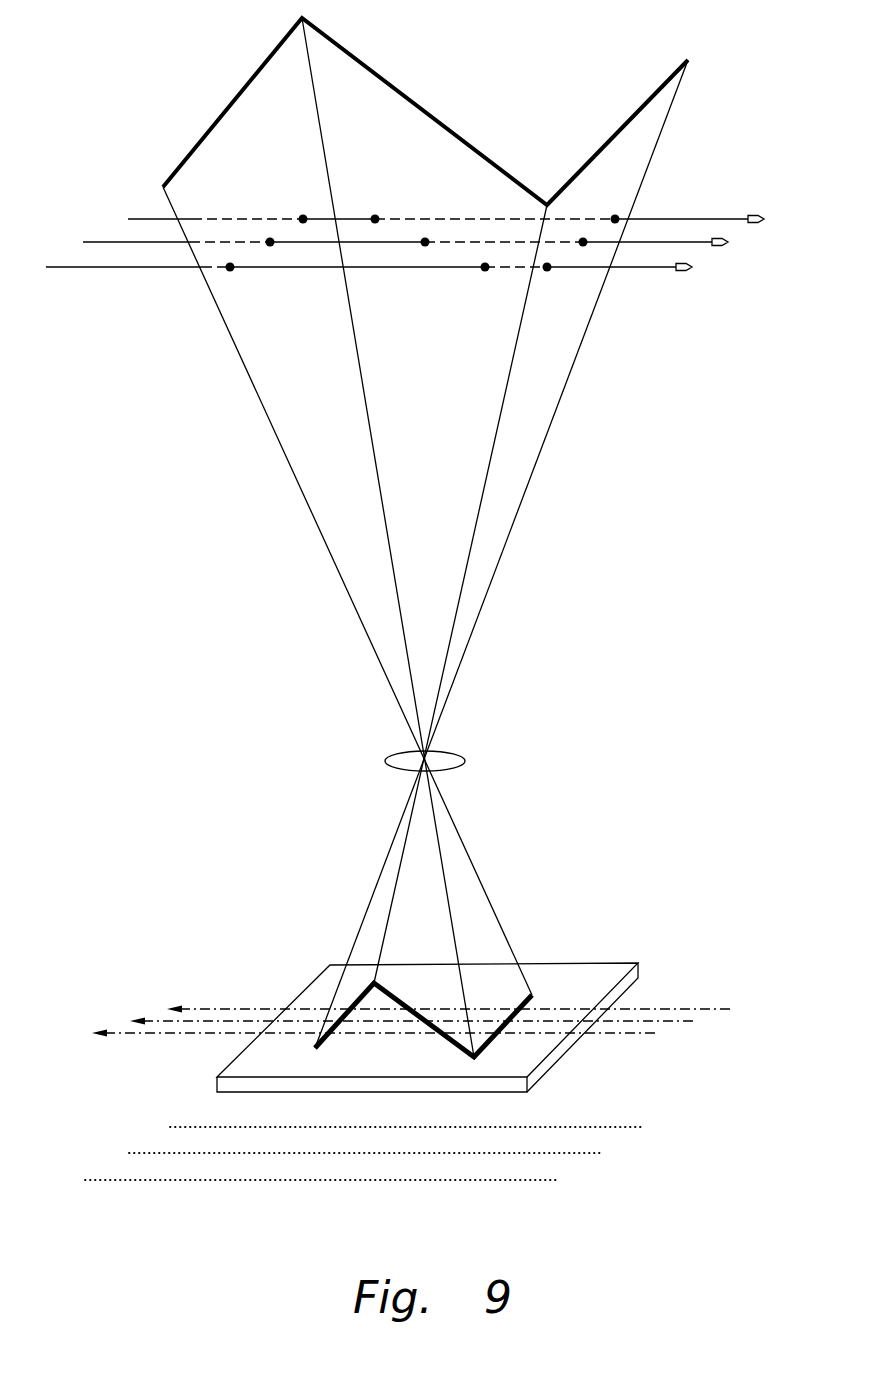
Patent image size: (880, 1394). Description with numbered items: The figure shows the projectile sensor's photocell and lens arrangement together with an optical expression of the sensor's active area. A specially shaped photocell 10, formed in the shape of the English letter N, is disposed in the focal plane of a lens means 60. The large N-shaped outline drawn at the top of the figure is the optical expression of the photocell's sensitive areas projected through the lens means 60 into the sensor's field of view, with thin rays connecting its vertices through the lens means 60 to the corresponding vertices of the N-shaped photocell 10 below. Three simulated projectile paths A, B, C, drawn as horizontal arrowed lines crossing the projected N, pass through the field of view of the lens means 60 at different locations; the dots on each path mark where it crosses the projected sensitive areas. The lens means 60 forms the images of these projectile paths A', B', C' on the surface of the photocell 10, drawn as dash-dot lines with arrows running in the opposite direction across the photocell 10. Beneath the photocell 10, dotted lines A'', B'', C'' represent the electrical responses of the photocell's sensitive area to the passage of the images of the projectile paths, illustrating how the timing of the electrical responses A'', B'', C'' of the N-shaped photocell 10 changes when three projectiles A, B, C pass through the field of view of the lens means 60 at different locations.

The photocell with uniquely-shaped photosensitive active area 10 is at (313, 971).
The lens means 60 is at (455, 751).
The simulated projectile path A is at (354, 268).
The simulated projectile path B is at (388, 243).
The simulated projectile path C is at (420, 220).
The projectile image path A' is at (478, 1005).
The projectile image path B' is at (443, 1025).
The projectile image path C' is at (406, 1040).
The electrical response A'' is at (444, 1125).
The electrical response B'' is at (403, 1153).
The electrical response C'' is at (359, 1180).